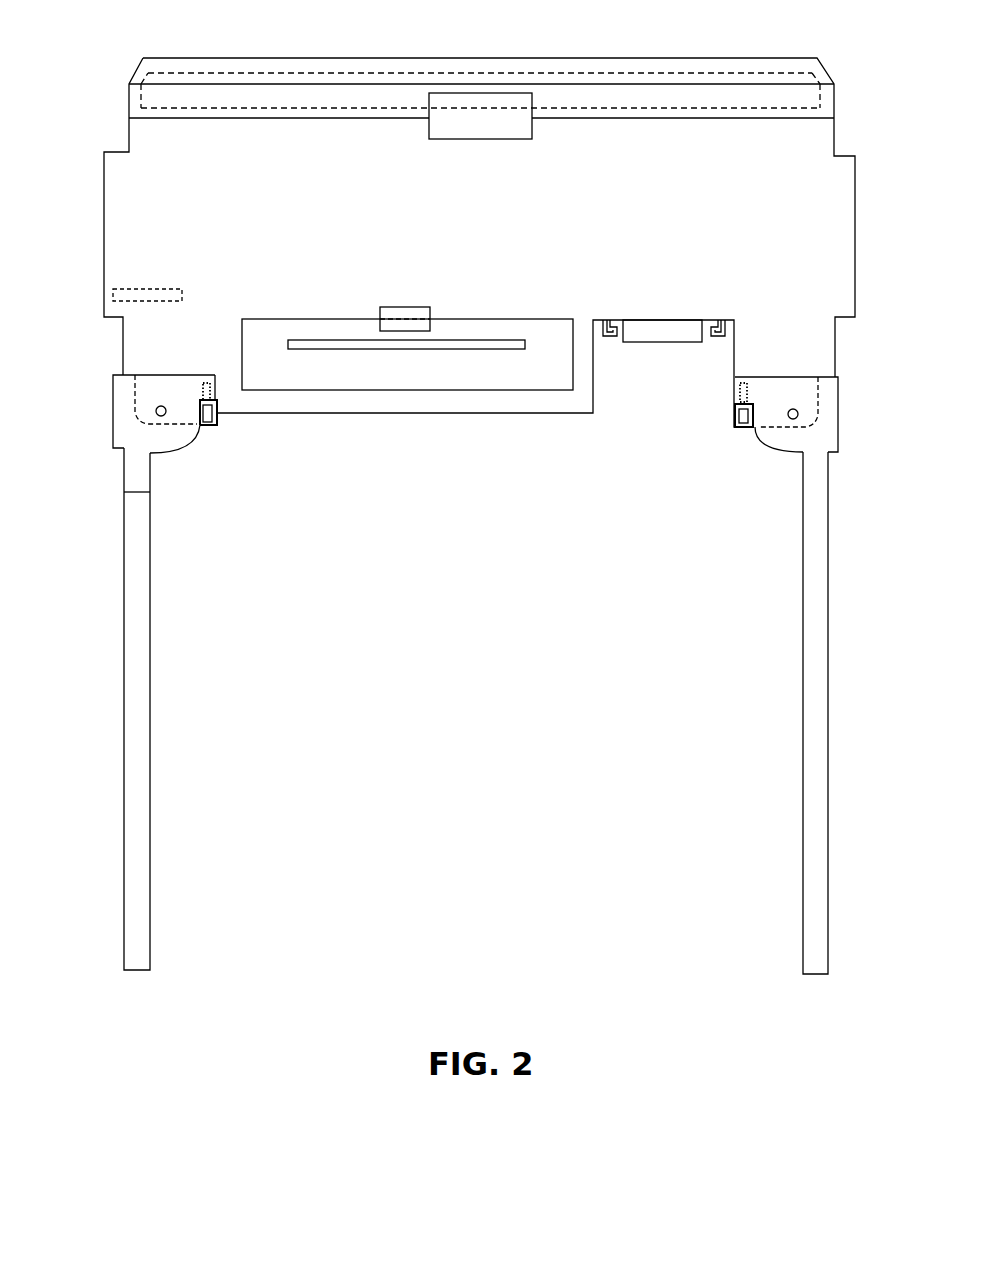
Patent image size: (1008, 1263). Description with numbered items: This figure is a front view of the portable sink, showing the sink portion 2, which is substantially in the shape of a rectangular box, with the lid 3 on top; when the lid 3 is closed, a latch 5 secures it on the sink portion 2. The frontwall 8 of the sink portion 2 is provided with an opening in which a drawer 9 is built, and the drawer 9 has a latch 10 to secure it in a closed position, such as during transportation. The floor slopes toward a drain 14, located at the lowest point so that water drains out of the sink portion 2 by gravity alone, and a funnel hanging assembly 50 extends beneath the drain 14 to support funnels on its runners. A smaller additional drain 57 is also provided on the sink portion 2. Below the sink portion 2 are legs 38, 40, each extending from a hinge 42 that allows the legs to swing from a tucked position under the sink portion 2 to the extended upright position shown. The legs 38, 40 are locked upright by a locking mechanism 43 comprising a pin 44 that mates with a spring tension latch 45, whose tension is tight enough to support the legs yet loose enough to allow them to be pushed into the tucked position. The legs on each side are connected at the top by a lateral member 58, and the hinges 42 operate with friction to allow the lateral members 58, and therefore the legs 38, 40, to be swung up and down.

The sink portion 2 is at (823, 227).
The lid 3 is at (840, 84).
The latch 5 is at (523, 100).
The frontwall 8 is at (545, 194).
The drawer 9 is at (558, 333).
The latch 10 is at (428, 308).
The drain 14 is at (668, 322).
The leg 38 is at (830, 727).
The leg 40 is at (122, 691).
The hinge 42 is at (157, 414).
The locking mechanism 43 is at (739, 418).
The pin 44 is at (213, 395).
The spring tension latch 45 is at (196, 374).
The funnel hanging assembly 50 is at (716, 341).
The drain 57 is at (141, 297).
The lateral member 58 is at (112, 406).